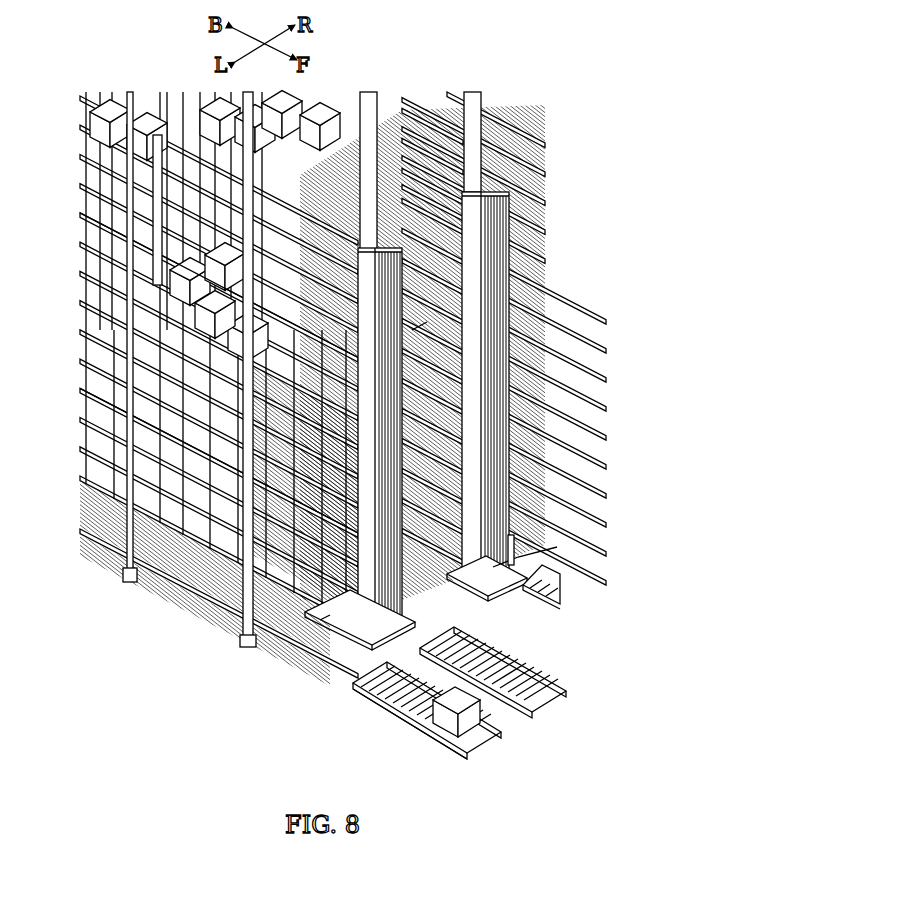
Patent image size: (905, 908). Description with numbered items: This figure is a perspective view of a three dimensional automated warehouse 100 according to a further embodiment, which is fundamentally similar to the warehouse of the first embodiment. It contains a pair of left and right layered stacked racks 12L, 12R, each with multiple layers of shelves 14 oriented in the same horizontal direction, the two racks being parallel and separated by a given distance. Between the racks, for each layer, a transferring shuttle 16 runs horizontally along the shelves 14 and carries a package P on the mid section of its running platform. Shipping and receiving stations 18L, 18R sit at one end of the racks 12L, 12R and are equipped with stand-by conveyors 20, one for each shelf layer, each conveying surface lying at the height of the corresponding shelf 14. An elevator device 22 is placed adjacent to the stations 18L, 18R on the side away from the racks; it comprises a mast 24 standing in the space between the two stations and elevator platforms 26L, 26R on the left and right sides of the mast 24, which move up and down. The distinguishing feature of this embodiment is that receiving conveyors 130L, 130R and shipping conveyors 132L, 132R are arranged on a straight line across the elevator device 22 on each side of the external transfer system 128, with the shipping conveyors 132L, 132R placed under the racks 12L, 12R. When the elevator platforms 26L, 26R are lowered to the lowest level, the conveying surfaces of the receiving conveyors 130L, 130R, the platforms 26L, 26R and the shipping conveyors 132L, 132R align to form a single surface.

The three dimensional automated warehouse 100 is at (527, 105).
The left layered stacked rack 12L is at (85, 108).
The right layered stacked rack 12R is at (407, 103).
The shelf 14 is at (133, 220).
The transferring shuttle 16 is at (85, 337).
The left shipping and receiving station 18L is at (405, 187).
The right shipping and receiving station 18R is at (348, 192).
The stand-by conveyor 20 is at (463, 375).
The elevator device 22 is at (516, 550).
The mast 24 is at (313, 668).
The left elevator platform 26L is at (330, 615).
The right elevator platform 26R is at (427, 322).
The external transfer system 128 is at (418, 732).
The left receiving conveyor 130L is at (482, 740).
The right receiving conveyor 130R is at (552, 702).
The left shipping conveyor 132L is at (267, 640).
The right shipping conveyor 132R is at (408, 597).
The package P is at (440, 723).